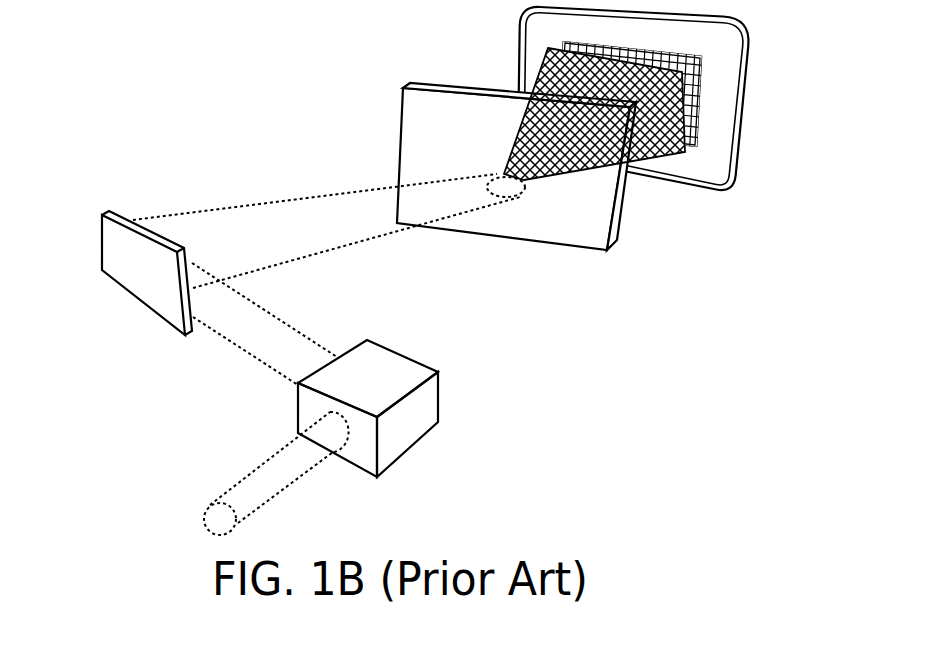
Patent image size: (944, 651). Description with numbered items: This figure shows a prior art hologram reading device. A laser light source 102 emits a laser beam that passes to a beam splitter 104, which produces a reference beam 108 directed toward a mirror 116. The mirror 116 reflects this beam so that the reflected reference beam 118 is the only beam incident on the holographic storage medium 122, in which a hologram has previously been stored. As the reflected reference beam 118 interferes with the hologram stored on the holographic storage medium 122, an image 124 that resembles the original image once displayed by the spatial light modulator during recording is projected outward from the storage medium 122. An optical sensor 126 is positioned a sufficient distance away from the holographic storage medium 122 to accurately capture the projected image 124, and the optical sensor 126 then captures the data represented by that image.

The laser light source 102 is at (287, 487).
The beam splitter 104 is at (423, 437).
The reference beam 108 is at (260, 363).
The mirror 116 is at (105, 211).
The reflected reference beam 118 is at (308, 197).
The holographic storage medium 122 is at (610, 218).
The image 124 is at (650, 155).
The optical sensor 126 is at (748, 47).